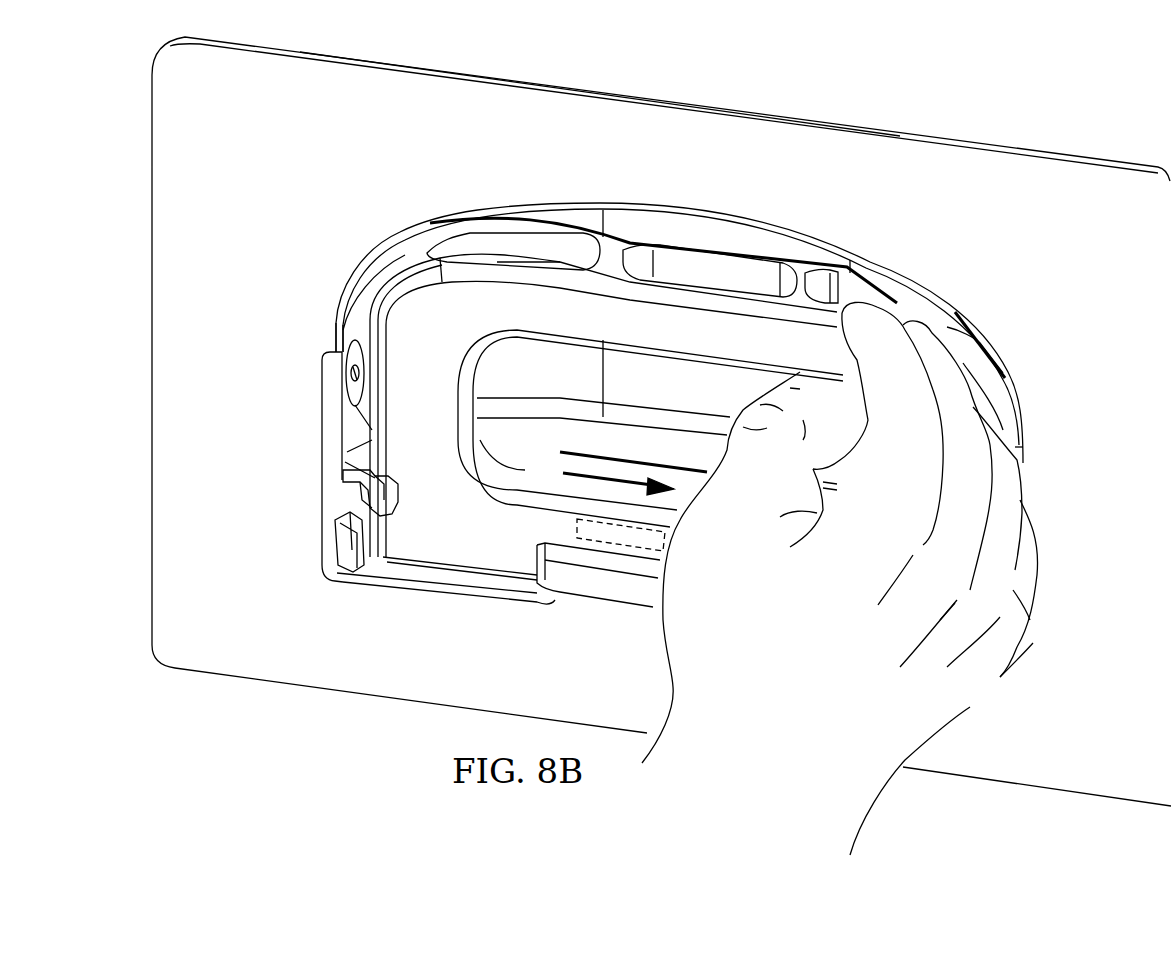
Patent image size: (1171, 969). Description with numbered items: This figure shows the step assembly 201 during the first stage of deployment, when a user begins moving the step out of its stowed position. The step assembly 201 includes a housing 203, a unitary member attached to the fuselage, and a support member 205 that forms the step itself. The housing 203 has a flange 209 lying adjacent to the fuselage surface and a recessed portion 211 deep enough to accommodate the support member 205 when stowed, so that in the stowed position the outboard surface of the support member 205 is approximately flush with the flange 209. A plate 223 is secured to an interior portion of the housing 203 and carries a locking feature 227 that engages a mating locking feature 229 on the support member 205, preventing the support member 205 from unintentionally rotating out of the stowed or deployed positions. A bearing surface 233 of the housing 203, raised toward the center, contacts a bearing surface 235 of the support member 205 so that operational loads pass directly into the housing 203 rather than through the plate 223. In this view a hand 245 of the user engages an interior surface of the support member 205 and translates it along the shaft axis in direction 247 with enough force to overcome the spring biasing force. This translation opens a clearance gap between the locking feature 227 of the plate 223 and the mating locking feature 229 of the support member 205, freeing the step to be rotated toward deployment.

The step assembly 201 is at (1060, 97).
The housing 203 is at (258, 172).
The support member 205 is at (388, 322).
The flange 209 is at (697, 137).
The recessed portion 211 is at (708, 405).
The plate 223 is at (325, 388).
The locking feature 227 is at (378, 510).
The mating locking feature 229 is at (343, 517).
The bearing surface 233 is at (618, 588).
The bearing surface 235 is at (577, 521).
The hand 245 is at (968, 707).
The direction 247 is at (592, 472).